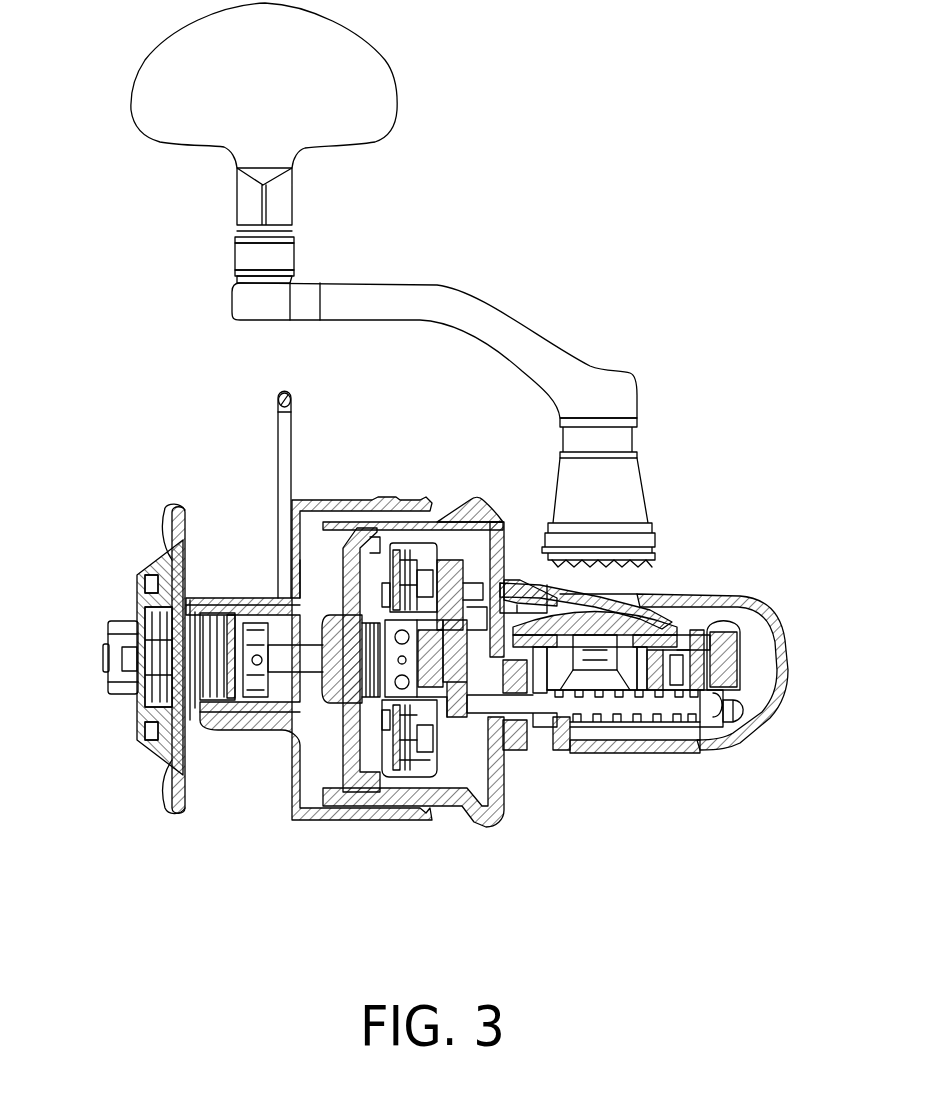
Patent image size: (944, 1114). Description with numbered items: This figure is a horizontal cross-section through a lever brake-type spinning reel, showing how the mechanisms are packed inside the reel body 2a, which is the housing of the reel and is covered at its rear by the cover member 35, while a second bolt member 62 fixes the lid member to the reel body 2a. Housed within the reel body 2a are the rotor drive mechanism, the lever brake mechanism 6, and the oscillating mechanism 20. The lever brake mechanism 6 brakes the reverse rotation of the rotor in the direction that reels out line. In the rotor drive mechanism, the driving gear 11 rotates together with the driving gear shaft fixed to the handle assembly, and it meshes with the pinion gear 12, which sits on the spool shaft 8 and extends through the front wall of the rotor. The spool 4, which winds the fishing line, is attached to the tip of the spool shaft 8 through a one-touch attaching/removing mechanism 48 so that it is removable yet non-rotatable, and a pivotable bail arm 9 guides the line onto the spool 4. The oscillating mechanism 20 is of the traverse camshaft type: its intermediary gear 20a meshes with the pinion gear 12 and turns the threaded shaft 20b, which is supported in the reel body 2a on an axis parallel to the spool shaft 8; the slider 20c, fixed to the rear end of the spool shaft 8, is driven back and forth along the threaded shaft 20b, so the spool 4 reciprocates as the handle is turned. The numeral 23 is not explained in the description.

The reel body 2a is at (765, 683).
The spool 4 is at (252, 812).
The lever brake mechanism 6 is at (434, 530).
The spool shaft 8 is at (285, 650).
The bail arm 9 is at (257, 382).
The driving gear 11 is at (676, 668).
The pinion gear 12 is at (527, 672).
The oscillating mechanism 20 is at (659, 746).
The intermediary gear 20a is at (523, 678).
The threaded shaft 20b is at (688, 742).
The slider 20c is at (705, 600).
The spool drum 23 is at (214, 705).
The cover member 35 is at (773, 597).
The one-touch attaching/removing mechanism 48 is at (89, 668).
The second bolt member 62 is at (735, 667).